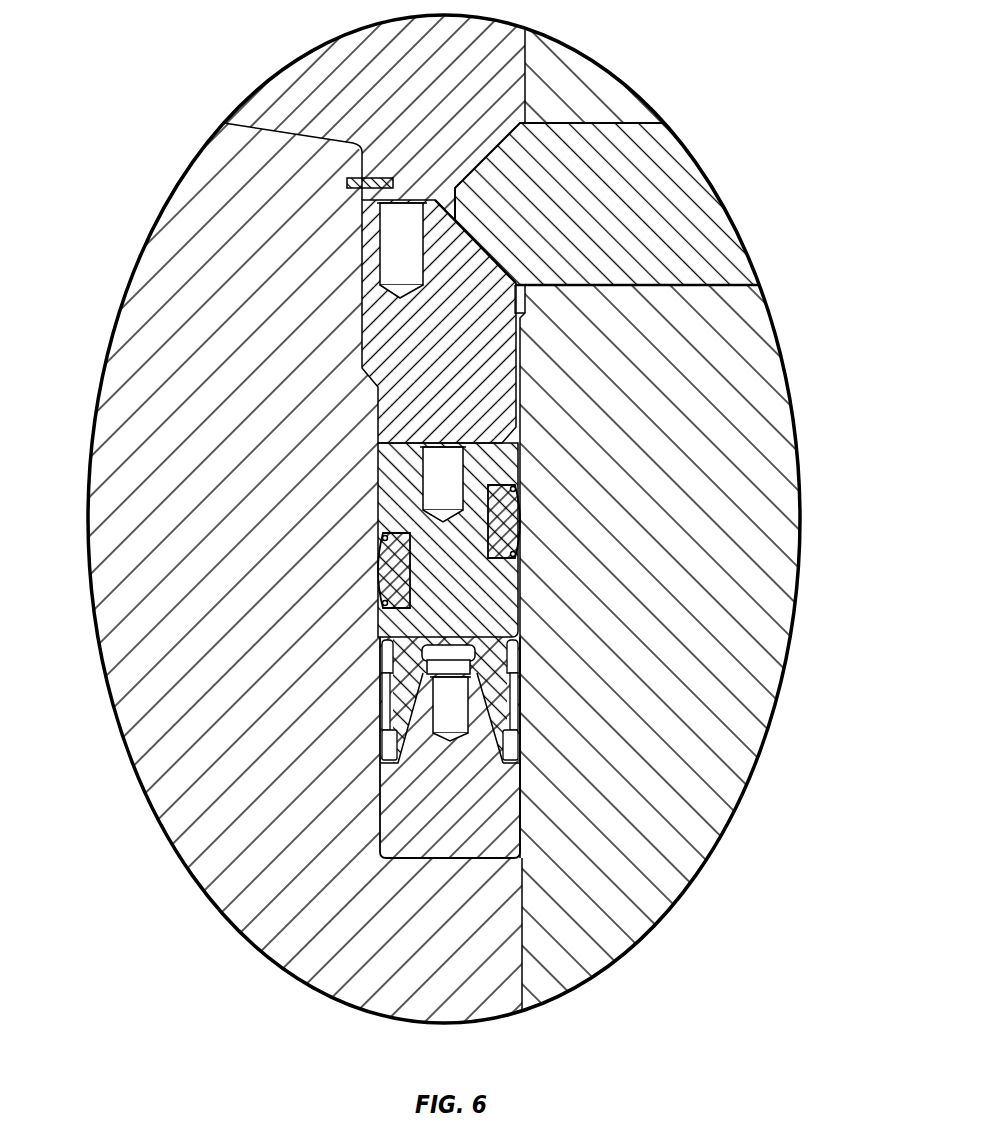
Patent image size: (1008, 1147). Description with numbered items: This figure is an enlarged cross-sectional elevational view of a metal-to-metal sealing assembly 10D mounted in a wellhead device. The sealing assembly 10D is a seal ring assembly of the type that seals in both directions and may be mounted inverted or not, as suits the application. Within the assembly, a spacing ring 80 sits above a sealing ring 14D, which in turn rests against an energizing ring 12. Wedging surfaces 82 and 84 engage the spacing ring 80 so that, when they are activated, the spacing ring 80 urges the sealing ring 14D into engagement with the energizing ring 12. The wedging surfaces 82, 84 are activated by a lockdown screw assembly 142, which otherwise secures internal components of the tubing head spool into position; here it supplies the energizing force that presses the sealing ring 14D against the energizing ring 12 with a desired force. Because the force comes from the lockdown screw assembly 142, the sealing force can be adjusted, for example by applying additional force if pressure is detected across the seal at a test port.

The sealing assembly 10D is at (300, 457).
The spacing ring 80 is at (417, 333).
The wedging surface 82 is at (492, 155).
The wedging surface 84 is at (491, 253).
The lockdown screw assembly 142 is at (678, 200).
The sealing ring 14D is at (445, 593).
The energizing ring 12 is at (452, 813).